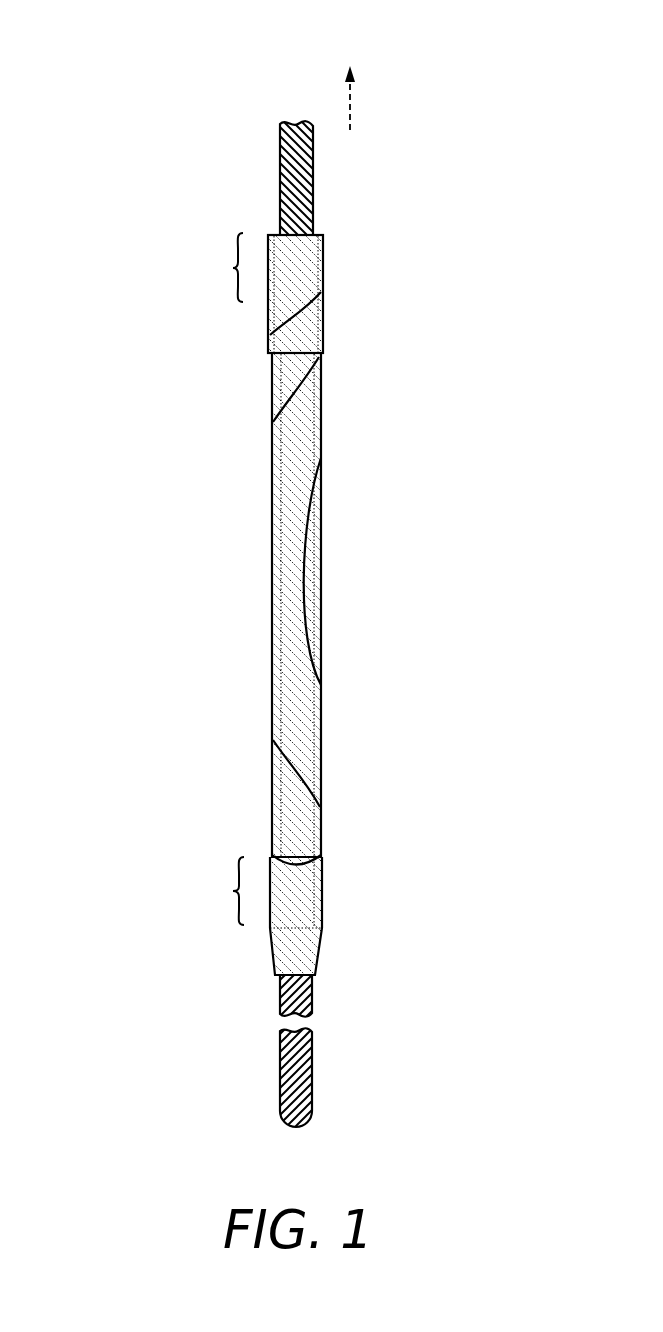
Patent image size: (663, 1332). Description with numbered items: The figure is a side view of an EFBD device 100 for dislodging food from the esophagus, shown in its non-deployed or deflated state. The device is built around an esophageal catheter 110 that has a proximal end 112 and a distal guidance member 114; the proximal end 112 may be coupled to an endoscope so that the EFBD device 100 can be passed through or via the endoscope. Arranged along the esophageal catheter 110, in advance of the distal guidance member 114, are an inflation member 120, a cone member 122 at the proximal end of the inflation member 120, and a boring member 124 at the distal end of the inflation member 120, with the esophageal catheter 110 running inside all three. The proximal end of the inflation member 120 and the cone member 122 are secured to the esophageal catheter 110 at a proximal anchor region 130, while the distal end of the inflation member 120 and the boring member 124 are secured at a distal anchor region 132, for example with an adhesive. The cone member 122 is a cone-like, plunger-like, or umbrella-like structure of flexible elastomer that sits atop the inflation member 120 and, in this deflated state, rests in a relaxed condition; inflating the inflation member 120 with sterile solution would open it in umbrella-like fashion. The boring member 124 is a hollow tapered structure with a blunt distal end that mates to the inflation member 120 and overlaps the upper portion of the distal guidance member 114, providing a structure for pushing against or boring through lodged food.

The EFBD device 100 is at (246, 69).
The proximal end 112 is at (449, 98).
The esophageal catheter 110 is at (313, 197).
The proximal anchor region 130 is at (279, 289).
The cone member 122 is at (323, 275).
The inflation member 120 is at (321, 577).
The distal anchor region 132 is at (292, 913).
The boring member 124 is at (322, 905).
The distal guidance member 114 is at (312, 1073).